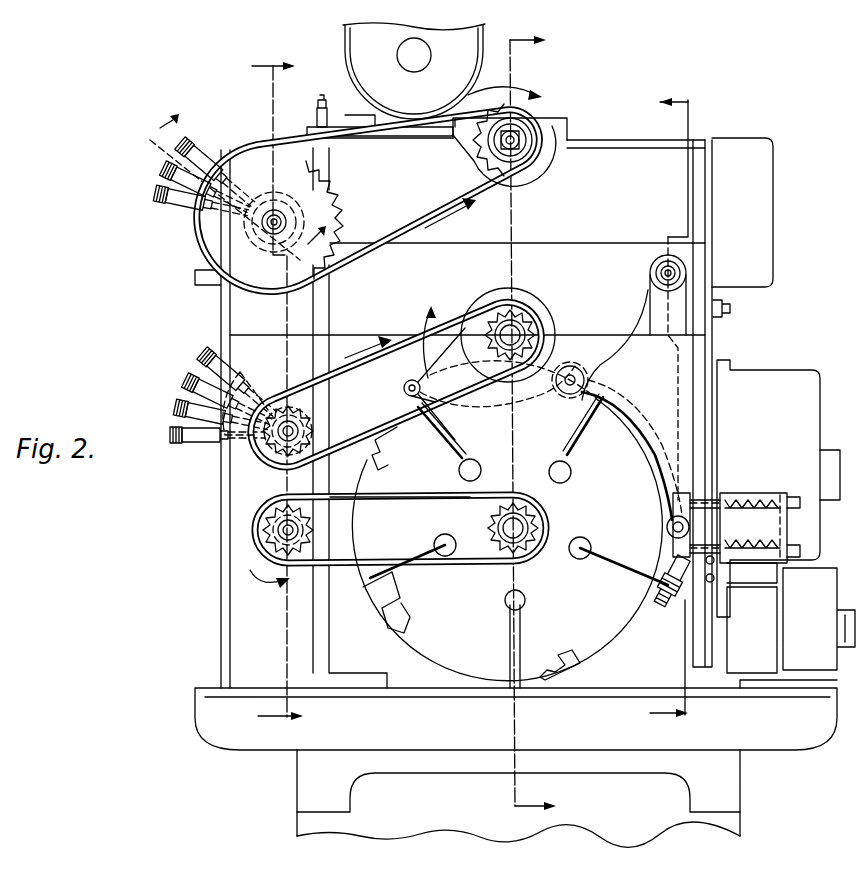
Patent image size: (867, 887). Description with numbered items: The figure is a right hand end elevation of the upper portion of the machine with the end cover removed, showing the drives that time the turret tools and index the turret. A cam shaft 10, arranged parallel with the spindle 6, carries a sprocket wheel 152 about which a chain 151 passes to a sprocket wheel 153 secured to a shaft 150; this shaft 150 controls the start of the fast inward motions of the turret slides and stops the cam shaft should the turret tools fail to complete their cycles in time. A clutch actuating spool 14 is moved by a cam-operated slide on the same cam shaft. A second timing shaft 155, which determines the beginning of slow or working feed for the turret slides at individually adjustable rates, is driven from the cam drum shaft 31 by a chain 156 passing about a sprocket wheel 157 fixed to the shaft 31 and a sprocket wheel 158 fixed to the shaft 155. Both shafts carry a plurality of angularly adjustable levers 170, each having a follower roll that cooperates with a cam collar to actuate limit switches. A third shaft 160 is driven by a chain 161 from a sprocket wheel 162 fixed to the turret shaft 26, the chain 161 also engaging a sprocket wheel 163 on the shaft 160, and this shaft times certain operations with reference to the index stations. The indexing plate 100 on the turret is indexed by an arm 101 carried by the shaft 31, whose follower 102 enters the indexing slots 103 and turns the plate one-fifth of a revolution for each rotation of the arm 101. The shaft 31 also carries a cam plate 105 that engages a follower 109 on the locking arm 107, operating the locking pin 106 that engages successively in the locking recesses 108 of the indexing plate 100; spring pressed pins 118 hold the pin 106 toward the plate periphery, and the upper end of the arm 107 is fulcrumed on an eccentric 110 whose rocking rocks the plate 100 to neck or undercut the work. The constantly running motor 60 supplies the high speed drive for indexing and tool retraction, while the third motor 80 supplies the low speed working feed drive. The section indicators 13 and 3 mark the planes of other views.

The third motor 80 is at (366, 70).
The cam shaft 10 is at (522, 130).
The sprocket wheel 152 is at (528, 176).
The shaft 150 is at (278, 208).
The sprocket wheel 153 is at (322, 192).
The chain 151 is at (418, 214).
The levers 170 is at (178, 204).
The chain 156 is at (418, 348).
The shaft 31 is at (516, 318).
The sprocket wheel 157 is at (500, 300).
The cam plate 105 is at (522, 390).
The shaft 155 is at (275, 447).
The sprocket wheel 158 is at (284, 455).
The arm 101 is at (405, 386).
The follower 102 is at (404, 396).
The third shaft 160 is at (391, 547).
The chain 161 is at (422, 500).
The sprocket wheel 162 is at (486, 524).
The sprocket wheel 163 is at (272, 532).
The indexing plate 100 is at (466, 662).
The turret shaft 26 is at (504, 572).
The indexing slots 103 is at (458, 456).
The locking recesses 108 is at (384, 466).
The follower 109 is at (578, 366).
The arm 107 is at (640, 408).
The locking pin 106 is at (667, 528).
The eccentric 110 is at (660, 258).
The motor 60 is at (798, 402).
The spring pressed pins 118 is at (758, 488).
The section line 13 is at (277, 390).
The section line 3 is at (526, 426).
The spindle 6 is at (672, 408).
The clutch actuating spool 14 is at (227, 186).